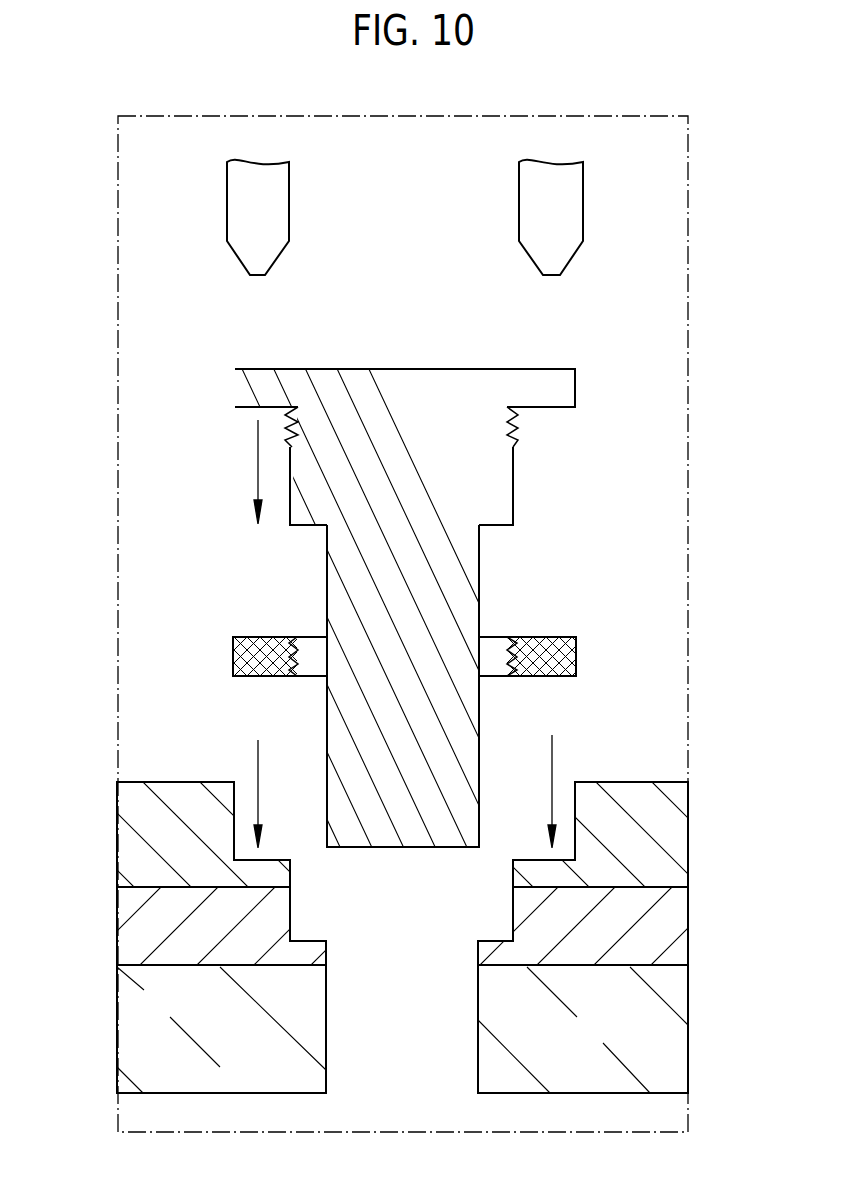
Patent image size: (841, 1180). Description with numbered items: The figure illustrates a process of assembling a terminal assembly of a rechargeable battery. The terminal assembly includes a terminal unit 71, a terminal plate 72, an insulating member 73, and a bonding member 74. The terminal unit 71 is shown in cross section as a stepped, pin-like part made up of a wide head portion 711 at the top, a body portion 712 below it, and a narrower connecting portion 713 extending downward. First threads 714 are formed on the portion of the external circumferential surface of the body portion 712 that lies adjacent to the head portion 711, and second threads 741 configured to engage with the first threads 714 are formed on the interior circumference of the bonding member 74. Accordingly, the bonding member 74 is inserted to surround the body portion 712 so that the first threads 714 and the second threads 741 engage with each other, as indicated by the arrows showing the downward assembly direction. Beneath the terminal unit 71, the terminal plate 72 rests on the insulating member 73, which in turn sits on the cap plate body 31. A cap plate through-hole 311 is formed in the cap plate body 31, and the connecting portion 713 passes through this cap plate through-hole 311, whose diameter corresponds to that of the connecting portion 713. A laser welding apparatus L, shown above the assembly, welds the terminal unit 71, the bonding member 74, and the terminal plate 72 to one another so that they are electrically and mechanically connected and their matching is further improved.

The laser welding apparatus L is at (562, 203).
The terminal unit 71 is at (343, 568).
The head portion 711 is at (560, 396).
The body portion 712 is at (490, 482).
The connecting portion 713 is at (457, 716).
The first threads 714 is at (522, 422).
The bonding member 74 is at (493, 657).
The second threads 741 is at (576, 660).
The terminal plate 72 is at (145, 850).
The insulating member 73 is at (145, 934).
The cap plate body 31 is at (398, 1029).
The cap plate through-hole 311 is at (478, 1004).